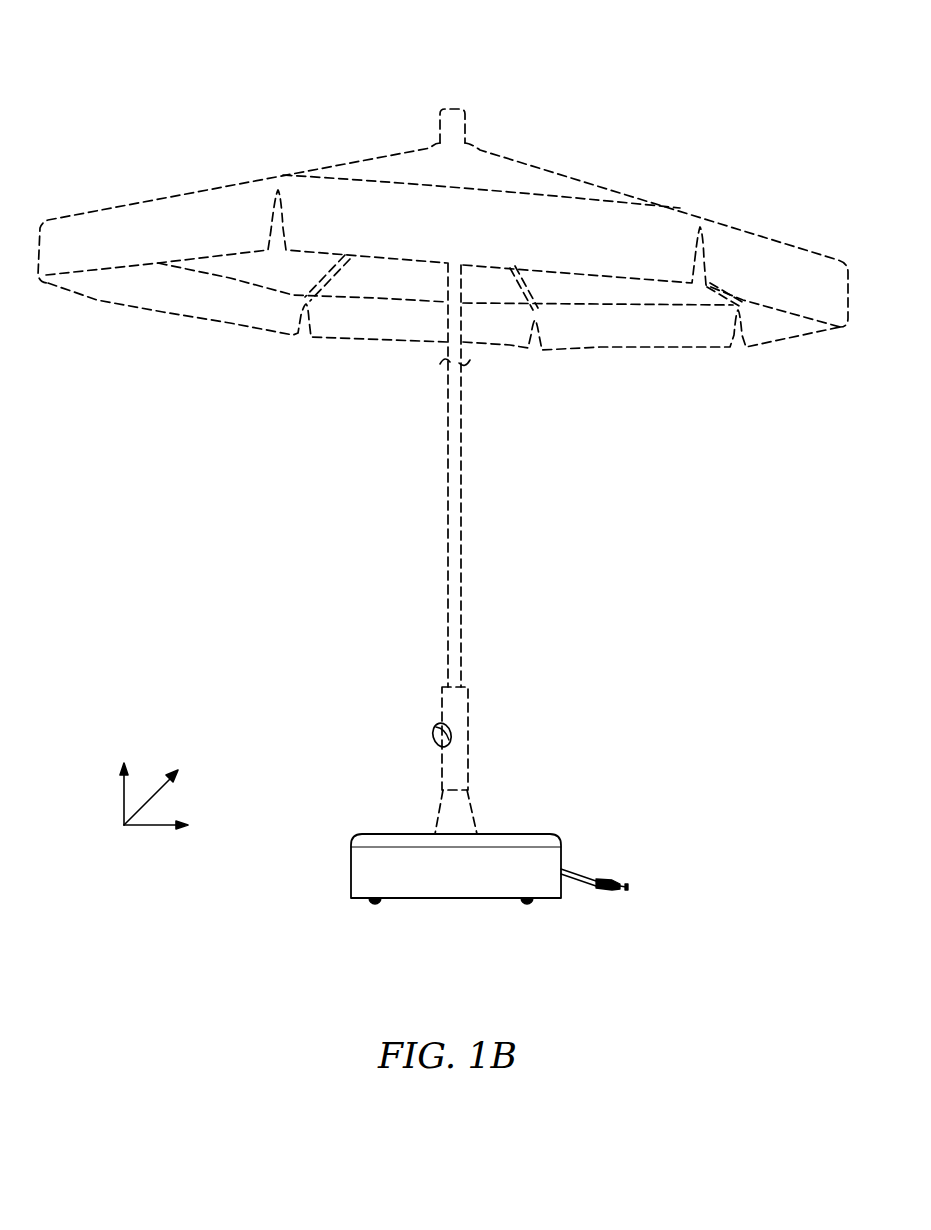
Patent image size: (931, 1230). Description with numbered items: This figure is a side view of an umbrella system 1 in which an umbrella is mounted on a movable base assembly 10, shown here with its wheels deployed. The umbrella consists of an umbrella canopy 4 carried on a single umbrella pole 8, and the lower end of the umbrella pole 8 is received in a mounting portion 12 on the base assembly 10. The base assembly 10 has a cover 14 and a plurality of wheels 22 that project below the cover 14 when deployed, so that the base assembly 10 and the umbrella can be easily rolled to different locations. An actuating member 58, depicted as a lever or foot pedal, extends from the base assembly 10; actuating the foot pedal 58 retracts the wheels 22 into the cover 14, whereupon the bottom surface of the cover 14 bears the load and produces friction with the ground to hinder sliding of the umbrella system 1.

The umbrella system 1 is at (158, 53).
The umbrella canopy 4 is at (810, 298).
The umbrella pole 8 is at (461, 533).
The base assembly 10 is at (548, 792).
The mounting portion 12 is at (435, 831).
The cover 14 is at (350, 863).
The wheels 22 is at (529, 903).
The actuating member 58 is at (583, 886).